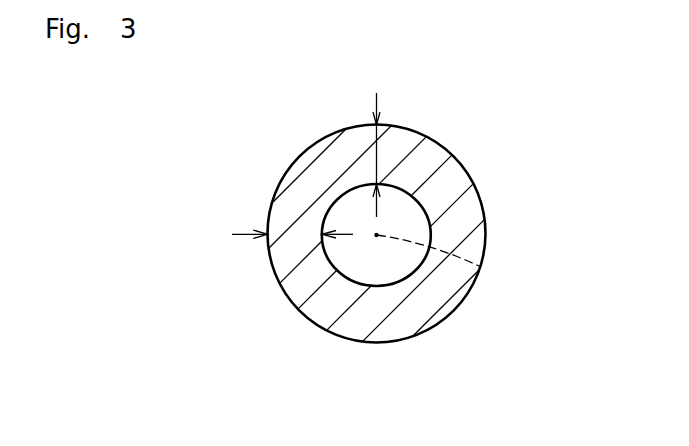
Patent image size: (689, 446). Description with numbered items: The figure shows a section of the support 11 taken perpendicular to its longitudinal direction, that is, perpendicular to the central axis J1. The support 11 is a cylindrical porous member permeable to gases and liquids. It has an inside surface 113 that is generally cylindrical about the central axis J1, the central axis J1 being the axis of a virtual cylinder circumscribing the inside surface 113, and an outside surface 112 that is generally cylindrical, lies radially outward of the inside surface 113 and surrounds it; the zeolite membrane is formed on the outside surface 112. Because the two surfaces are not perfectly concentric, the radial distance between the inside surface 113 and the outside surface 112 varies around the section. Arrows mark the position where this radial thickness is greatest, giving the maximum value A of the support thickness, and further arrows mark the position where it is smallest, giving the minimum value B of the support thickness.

The support 11 is at (270, 108).
The outside surface 112 is at (376, 344).
The inside surface 113 is at (380, 272).
The central axis J1 is at (481, 267).
The maximum value of the support thickness A is at (377, 147).
The minimum value of the support thickness B is at (281, 233).